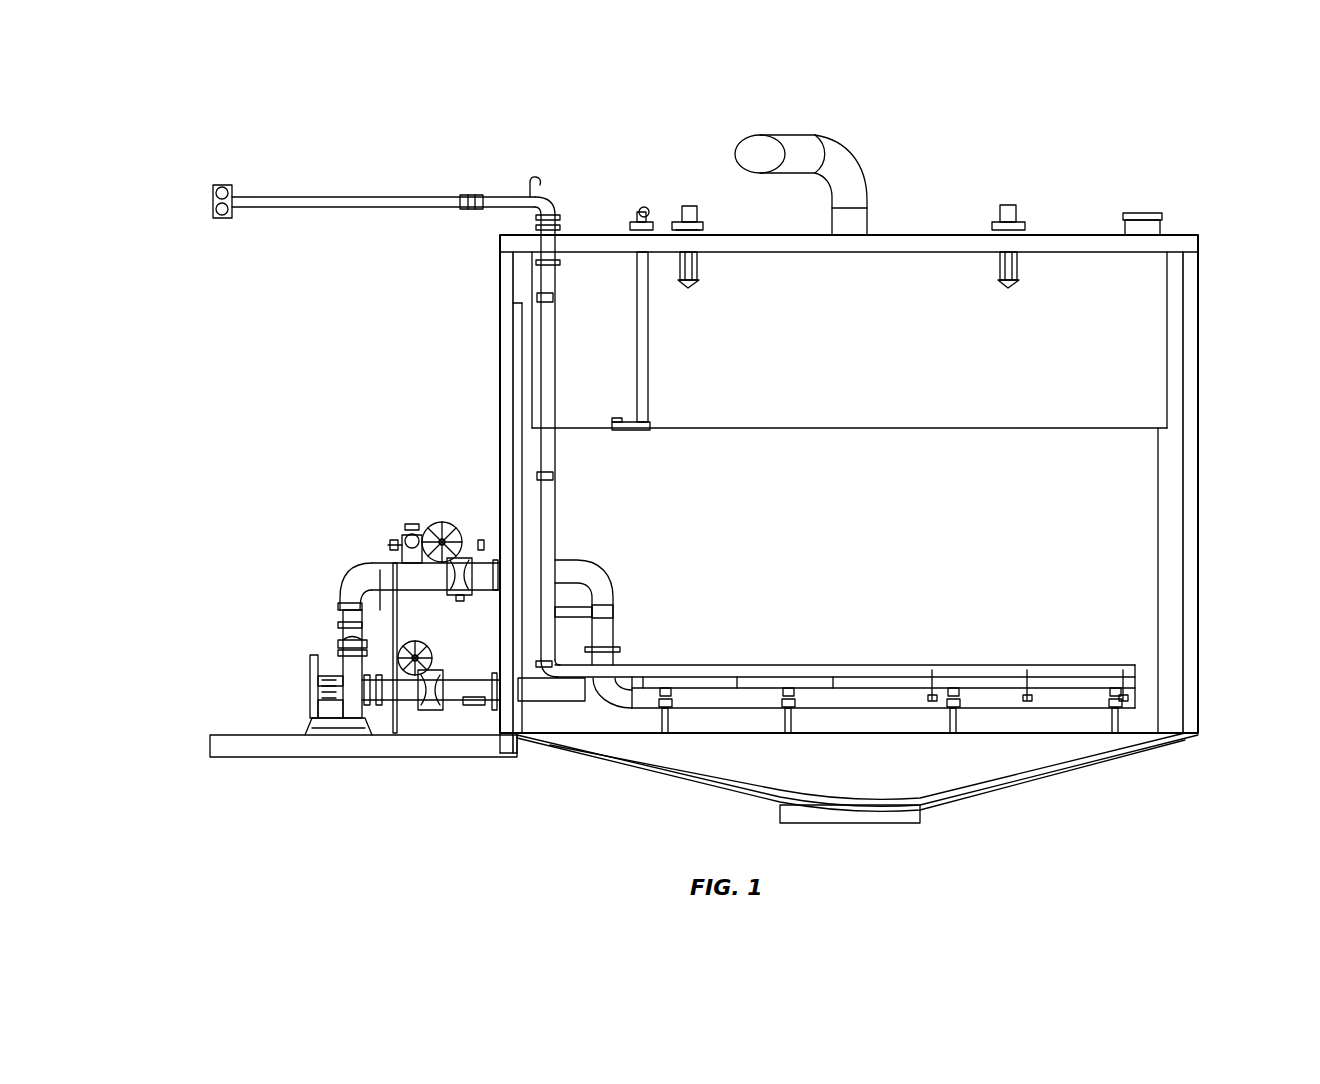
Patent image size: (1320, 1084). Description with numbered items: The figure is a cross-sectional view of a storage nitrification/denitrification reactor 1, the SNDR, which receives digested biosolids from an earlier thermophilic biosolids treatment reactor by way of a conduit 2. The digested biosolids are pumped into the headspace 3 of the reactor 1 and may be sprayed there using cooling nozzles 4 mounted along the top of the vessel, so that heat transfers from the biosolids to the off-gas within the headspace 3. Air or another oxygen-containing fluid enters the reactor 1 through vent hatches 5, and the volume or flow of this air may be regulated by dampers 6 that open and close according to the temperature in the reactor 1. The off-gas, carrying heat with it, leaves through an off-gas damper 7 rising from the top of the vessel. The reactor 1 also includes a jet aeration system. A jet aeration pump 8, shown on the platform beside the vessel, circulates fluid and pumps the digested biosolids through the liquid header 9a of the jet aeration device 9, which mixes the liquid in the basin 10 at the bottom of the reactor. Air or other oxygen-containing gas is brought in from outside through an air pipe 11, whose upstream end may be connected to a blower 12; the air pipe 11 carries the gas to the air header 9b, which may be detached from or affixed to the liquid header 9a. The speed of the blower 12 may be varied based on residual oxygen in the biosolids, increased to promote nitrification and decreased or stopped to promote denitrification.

The storage nitrification/denitrification reactor 1 is at (1198, 490).
The conduit 2 is at (262, 735).
The headspace 3 is at (1148, 335).
The cooling nozzles 4 is at (690, 206).
The vent hatches 5 is at (1165, 228).
The dampers 6 is at (1145, 212).
The off-gas damper 7 is at (855, 162).
The jet aeration pump 8 is at (338, 723).
The jet aeration device 9 is at (860, 712).
The liquid header 9a is at (946, 611).
The air header 9b is at (1133, 637).
The basin 10 is at (965, 762).
The air pipe 11 is at (555, 375).
The blower 12 is at (224, 183).